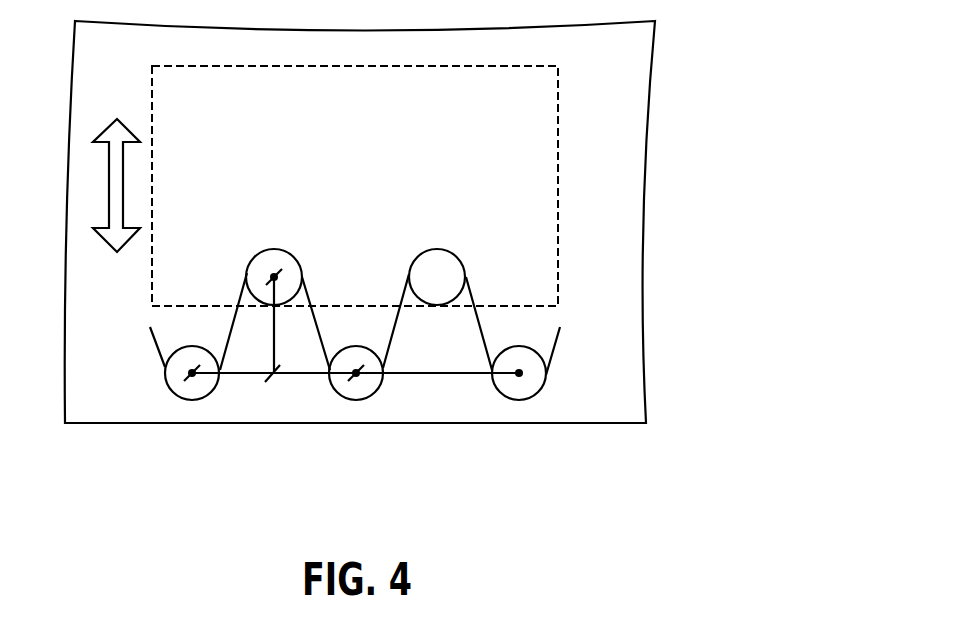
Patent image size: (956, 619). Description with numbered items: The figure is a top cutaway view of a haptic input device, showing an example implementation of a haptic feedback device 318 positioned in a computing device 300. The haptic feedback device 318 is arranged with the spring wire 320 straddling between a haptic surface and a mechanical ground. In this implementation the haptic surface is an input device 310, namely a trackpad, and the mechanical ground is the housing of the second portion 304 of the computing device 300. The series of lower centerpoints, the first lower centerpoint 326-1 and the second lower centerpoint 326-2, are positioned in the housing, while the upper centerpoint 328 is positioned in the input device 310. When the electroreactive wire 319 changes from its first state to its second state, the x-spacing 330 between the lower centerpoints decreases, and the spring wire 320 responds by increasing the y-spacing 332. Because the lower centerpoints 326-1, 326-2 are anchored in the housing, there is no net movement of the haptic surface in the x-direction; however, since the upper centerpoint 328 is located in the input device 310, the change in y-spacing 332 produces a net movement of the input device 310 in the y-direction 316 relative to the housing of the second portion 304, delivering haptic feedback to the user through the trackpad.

The computing device 300 is at (680, 52).
The second portion 304 is at (628, 190).
The input device 310 is at (540, 148).
The y-direction 316 is at (109, 158).
The haptic feedback device 318 is at (432, 345).
The electroreactive wire 319 is at (240, 373).
The spring wire 320 is at (610, 352).
The first lower centerpoint 326-1 is at (200, 362).
The second lower centerpoint 326-2 is at (362, 373).
The upper centerpoint 328 is at (271, 277).
The x-spacing 330 is at (297, 373).
The y-spacing 332 is at (275, 328).